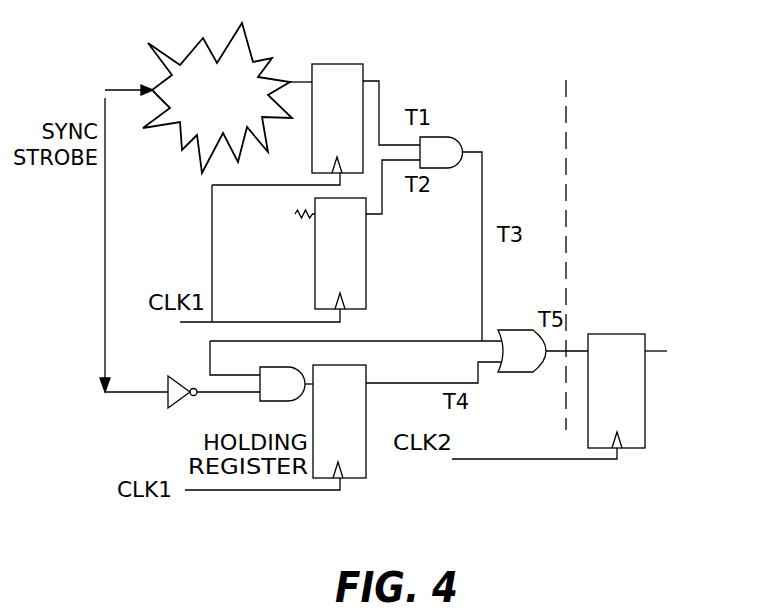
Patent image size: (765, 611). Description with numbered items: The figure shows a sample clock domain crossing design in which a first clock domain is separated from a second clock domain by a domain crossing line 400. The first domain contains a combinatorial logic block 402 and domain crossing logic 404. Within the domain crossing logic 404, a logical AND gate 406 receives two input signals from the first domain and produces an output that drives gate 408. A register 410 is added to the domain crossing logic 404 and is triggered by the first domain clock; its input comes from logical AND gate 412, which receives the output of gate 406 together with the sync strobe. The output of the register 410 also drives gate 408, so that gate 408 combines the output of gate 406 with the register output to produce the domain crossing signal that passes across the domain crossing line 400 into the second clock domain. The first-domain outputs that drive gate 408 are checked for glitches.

The domain crossing line 400 is at (566, 212).
The combinatorial logic block 402 is at (232, 63).
The domain crossing logic 404 is at (428, 72).
The logical AND gate 406 is at (443, 135).
The logical AND gate 408 is at (518, 328).
The register 410 is at (355, 457).
The logical AND gate 412 is at (270, 388).